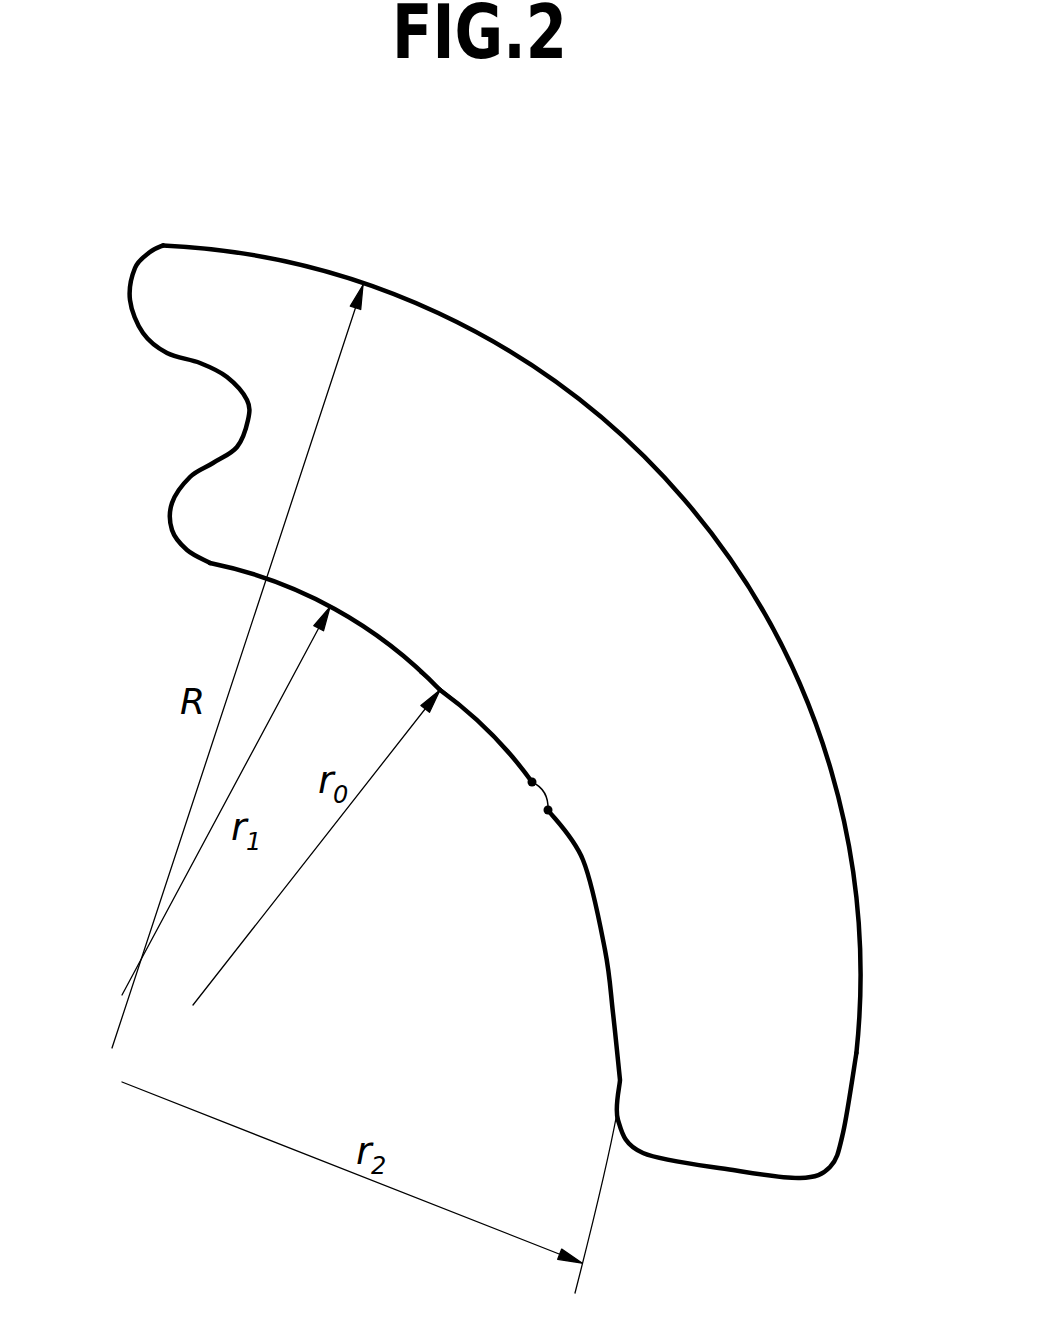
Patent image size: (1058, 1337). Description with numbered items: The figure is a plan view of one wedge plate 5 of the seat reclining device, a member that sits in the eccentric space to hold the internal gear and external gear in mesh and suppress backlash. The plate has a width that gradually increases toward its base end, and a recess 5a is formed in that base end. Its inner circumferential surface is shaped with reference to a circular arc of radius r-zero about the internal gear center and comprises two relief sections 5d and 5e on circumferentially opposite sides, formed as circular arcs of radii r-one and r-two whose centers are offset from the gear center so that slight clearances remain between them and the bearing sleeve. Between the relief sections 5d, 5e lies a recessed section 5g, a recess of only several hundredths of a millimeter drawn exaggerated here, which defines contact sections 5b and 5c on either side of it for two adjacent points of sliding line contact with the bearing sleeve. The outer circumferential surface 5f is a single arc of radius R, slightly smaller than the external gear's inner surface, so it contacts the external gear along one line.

The wedge plate 5 is at (491, 711).
The recess 5a is at (217, 415).
The contact section 5b is at (530, 783).
The contact section 5c is at (548, 812).
The relief section 5d is at (568, 747).
The relief section 5e is at (597, 795).
The outer circumferential surface 5f is at (628, 435).
The recessed section 5g is at (543, 795).